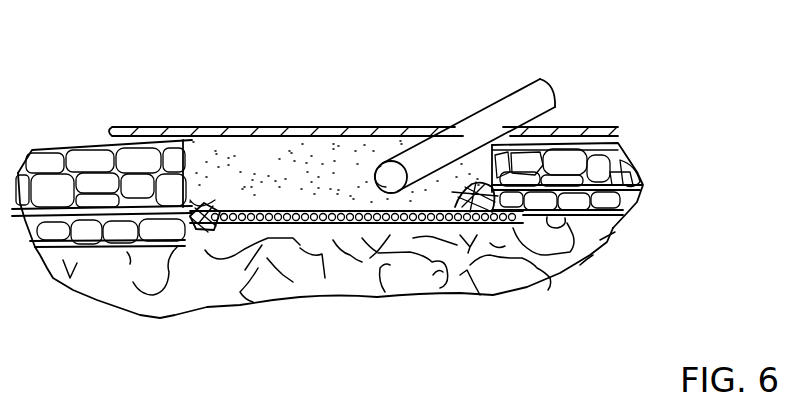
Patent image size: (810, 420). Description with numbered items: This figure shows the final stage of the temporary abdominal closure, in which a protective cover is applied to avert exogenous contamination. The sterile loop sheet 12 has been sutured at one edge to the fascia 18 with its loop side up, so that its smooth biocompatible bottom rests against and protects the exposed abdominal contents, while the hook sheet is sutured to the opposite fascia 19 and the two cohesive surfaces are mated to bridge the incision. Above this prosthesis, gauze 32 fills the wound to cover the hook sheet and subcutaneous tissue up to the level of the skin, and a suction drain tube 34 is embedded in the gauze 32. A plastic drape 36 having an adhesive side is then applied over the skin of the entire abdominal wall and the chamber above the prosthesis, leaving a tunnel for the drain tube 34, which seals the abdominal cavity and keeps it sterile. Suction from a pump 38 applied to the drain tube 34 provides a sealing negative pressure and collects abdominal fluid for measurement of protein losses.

The loop sheet 12 is at (325, 267).
The fascia 18 is at (102, 216).
The opposite fascia 19 is at (610, 232).
The gauze 32 is at (217, 168).
The suction drain tube 34 is at (520, 107).
The plastic drape 36 is at (403, 123).
The pump 38 is at (556, 88).